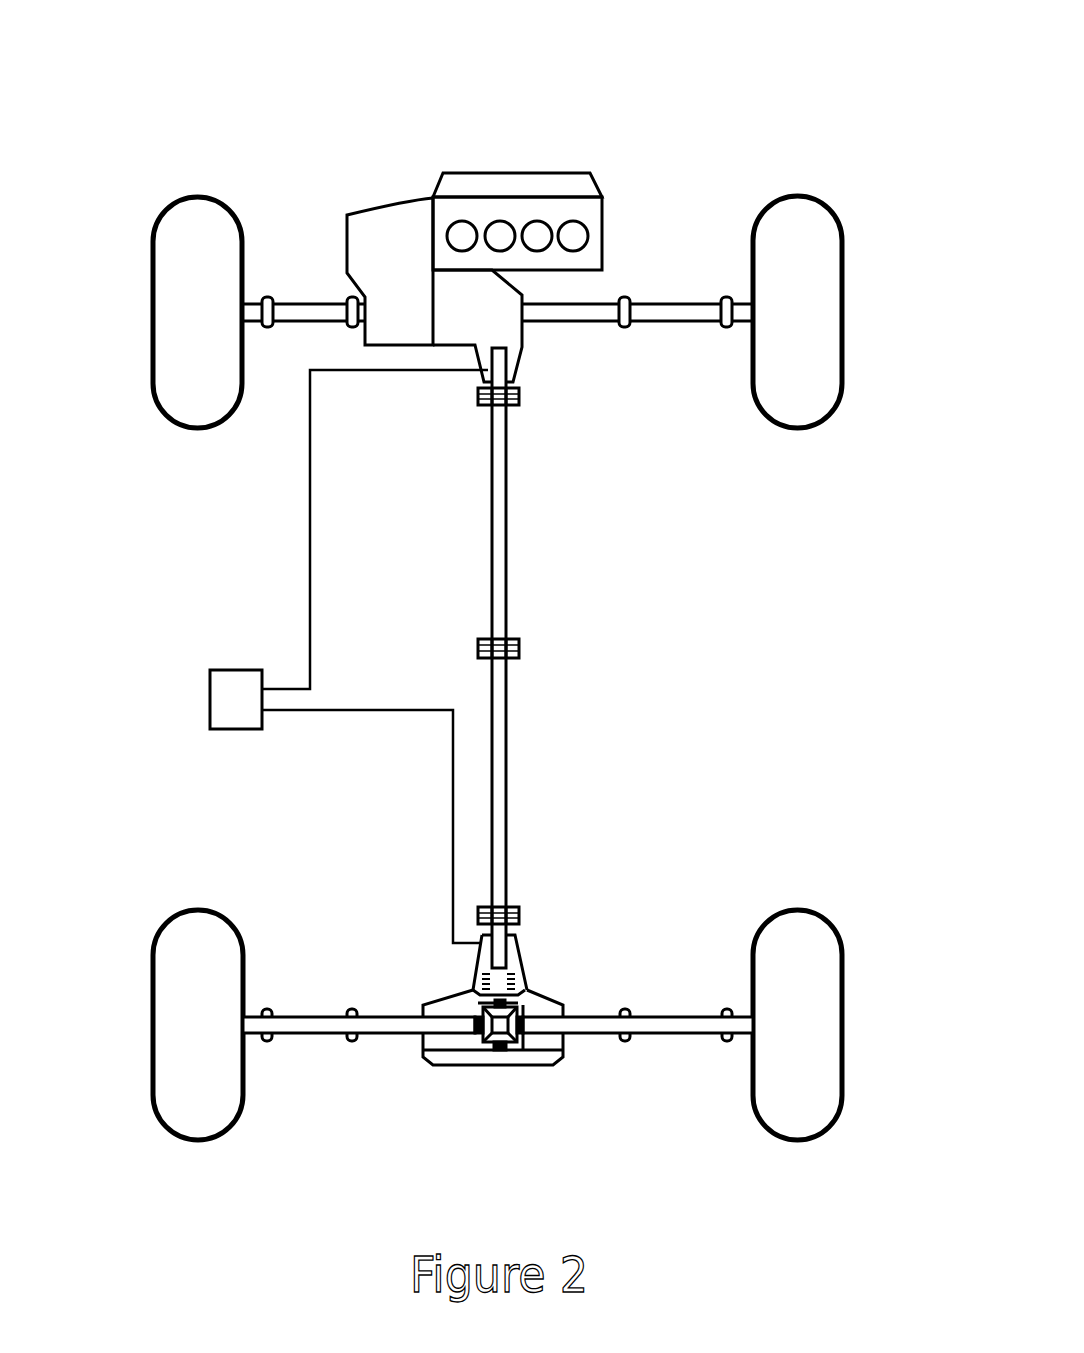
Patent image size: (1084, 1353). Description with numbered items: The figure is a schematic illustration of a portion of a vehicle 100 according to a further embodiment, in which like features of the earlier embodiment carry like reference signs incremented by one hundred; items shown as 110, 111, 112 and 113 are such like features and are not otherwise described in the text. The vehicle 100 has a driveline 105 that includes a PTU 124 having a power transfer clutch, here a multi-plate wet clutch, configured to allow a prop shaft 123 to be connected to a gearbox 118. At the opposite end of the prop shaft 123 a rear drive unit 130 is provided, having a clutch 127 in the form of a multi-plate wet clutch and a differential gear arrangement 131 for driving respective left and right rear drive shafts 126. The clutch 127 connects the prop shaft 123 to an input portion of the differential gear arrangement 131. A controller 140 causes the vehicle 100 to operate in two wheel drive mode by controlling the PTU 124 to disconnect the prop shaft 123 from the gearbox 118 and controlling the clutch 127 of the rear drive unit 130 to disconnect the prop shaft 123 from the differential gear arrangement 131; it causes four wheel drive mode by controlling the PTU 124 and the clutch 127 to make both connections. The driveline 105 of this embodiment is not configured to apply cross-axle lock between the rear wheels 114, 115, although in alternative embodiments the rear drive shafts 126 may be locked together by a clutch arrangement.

The vehicle 100 is at (750, 75).
The driveline 105 is at (610, 437).
The rear drive unit 110 is at (640, 658).
The engine 111 is at (592, 213).
The front left wheel 112 is at (185, 238).
The front right wheel 113 is at (813, 238).
The rear wheel 114 is at (185, 1098).
The rear wheel 115 is at (813, 1100).
The gearbox 118 is at (380, 225).
The prop shaft 123 is at (508, 540).
The PTU 124 is at (517, 365).
The rear drive shafts 126 is at (313, 1025).
The clutch 127 is at (477, 978).
The rear drive unit 130 is at (540, 993).
The differential gear arrangement 131 is at (487, 1045).
The controller 140 is at (218, 690).